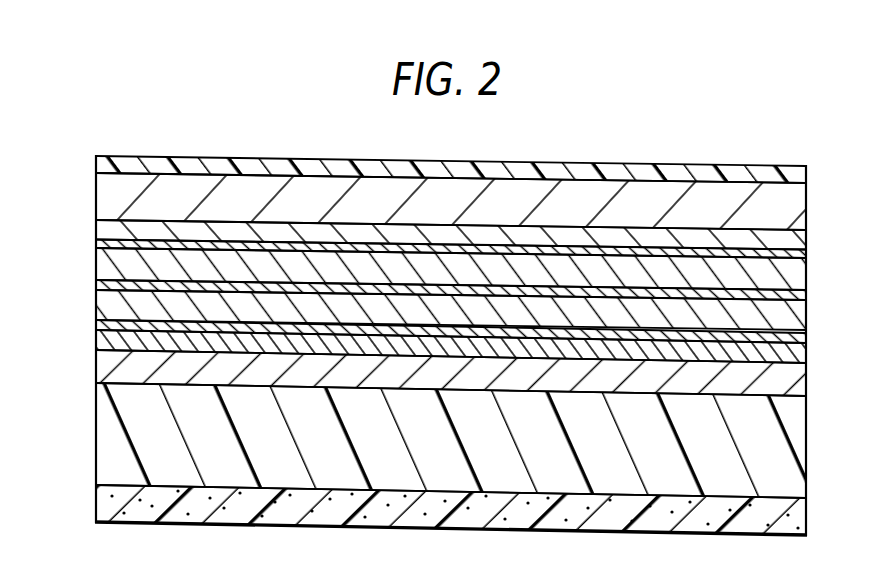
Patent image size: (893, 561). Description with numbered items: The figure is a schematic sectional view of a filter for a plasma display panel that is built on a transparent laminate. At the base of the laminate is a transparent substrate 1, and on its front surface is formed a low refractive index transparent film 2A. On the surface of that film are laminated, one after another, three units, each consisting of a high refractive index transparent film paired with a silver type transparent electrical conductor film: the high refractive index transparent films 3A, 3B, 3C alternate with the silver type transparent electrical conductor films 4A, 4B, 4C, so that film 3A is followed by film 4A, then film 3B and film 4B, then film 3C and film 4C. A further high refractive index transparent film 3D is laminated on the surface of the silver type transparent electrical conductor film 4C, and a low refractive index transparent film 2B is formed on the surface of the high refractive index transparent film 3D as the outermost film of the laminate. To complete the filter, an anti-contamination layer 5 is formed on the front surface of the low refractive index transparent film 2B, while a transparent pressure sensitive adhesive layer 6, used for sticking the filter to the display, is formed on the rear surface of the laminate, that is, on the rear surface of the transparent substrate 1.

The transparent substrate 1 is at (100, 431).
The low refractive index transparent film 2A is at (811, 387).
The low refractive index transparent film 2B is at (96, 197).
The high refractive index transparent film 3A is at (811, 353).
The high refractive index transparent film 3B is at (811, 315).
The high refractive index transparent film 3C is at (811, 275).
The high refractive index transparent film 3D is at (811, 245).
The silver type transparent electrical conductor film 4A is at (96, 326).
The silver type transparent electrical conductor film 4B is at (96, 284).
The silver type transparent electrical conductor film 4C is at (96, 244).
The anti-contamination layer 5 is at (811, 178).
The transparent pressure sensitive adhesive layer 6 is at (811, 518).